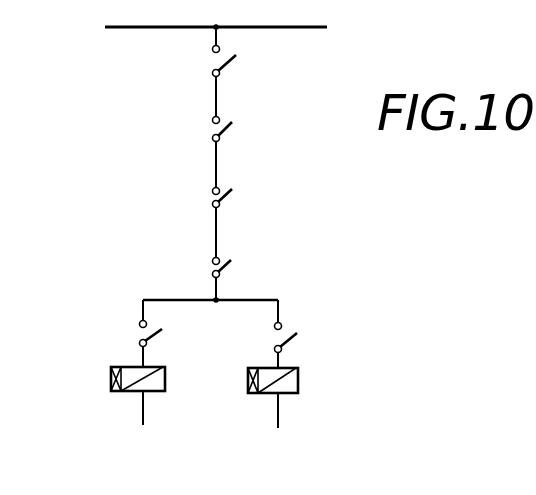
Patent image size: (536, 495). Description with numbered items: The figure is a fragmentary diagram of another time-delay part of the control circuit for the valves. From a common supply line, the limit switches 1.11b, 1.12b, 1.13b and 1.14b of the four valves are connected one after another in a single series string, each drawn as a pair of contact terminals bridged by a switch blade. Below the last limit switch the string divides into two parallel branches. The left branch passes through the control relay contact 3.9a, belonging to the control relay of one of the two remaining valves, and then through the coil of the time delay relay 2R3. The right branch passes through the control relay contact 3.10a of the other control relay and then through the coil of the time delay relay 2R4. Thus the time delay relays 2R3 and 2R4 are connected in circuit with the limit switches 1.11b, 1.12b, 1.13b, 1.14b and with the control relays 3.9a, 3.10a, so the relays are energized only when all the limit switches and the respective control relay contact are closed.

The limit switch 1.11b is at (222, 68).
The limit switch 1.12b is at (223, 137).
The limit switch 1.13b is at (223, 203).
The limit switch 1.14b is at (222, 273).
The control relay contact 3.9a is at (200, 331).
The control relay contact 3.10a is at (286, 347).
The time delay relay 2R3 is at (111, 382).
The time delay relay 2R4 is at (300, 381).